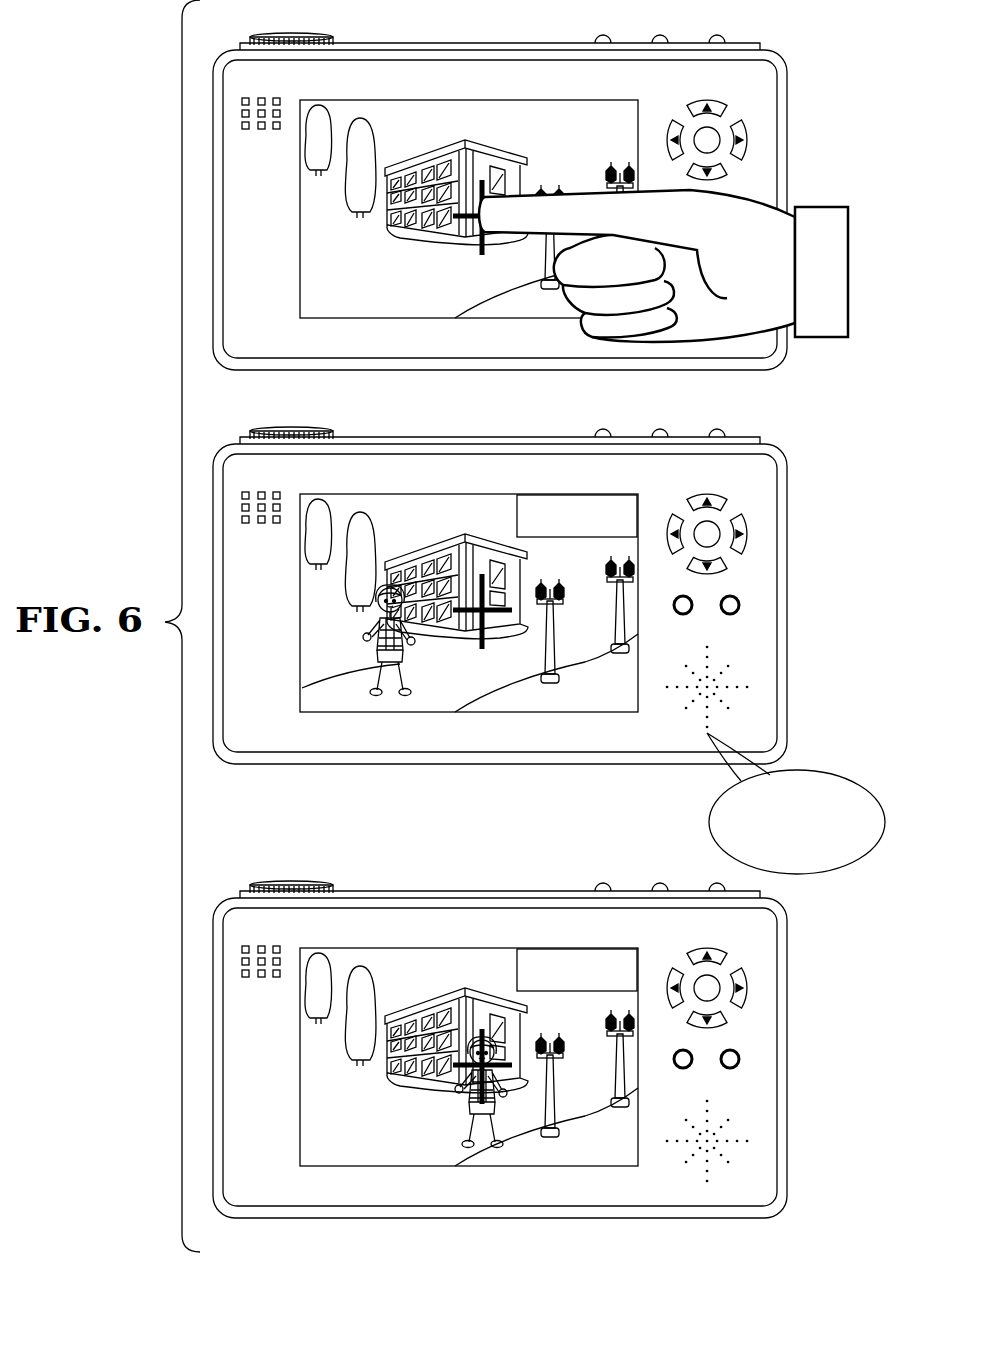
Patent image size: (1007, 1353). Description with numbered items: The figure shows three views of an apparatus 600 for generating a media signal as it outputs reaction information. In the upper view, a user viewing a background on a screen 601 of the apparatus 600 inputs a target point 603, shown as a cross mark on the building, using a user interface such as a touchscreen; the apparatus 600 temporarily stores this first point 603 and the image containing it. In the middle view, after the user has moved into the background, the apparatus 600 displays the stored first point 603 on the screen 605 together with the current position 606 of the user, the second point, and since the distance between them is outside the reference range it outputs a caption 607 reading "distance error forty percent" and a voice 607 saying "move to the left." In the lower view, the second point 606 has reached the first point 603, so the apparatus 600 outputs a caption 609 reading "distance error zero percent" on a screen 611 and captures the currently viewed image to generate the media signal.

The apparatus for generating a media signal 600 is at (493, 43).
The screen 601 is at (300, 246).
The target point (first point) 603 is at (488, 186).
The screen 605 is at (300, 640).
The current position of the user (second point) 606 is at (302, 683).
The caption / voice 607 is at (613, 495).
The caption 609 is at (613, 949).
The screen 611 is at (300, 1095).